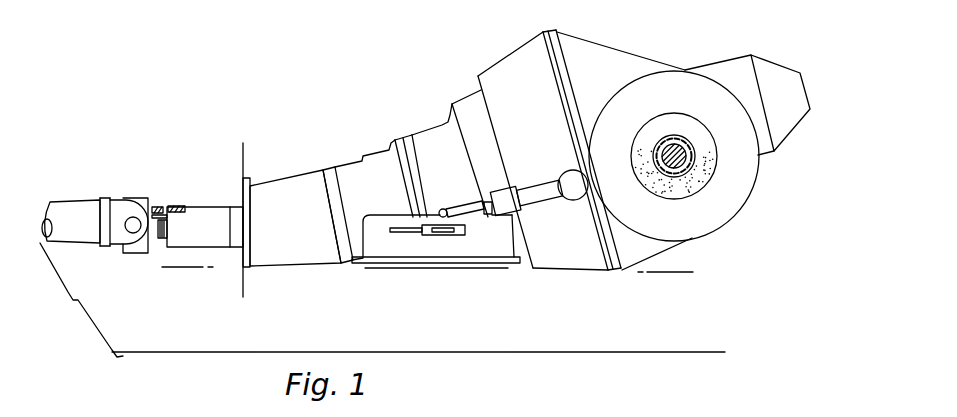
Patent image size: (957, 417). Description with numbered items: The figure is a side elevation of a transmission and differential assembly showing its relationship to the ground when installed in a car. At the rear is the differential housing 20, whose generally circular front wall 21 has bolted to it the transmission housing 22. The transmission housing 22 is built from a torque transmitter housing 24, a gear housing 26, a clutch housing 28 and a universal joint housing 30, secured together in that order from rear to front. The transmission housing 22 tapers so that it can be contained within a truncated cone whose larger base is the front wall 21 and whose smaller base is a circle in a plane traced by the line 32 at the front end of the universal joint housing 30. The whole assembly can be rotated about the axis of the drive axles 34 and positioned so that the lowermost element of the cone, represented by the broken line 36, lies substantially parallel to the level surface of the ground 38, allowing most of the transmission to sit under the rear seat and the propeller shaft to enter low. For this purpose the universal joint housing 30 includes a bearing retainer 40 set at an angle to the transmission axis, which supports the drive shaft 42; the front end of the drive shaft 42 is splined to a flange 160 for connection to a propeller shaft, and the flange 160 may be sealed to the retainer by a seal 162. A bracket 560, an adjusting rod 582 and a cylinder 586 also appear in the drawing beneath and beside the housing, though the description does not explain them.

The differential housing 20 is at (683, 82).
The front wall 21 is at (565, 56).
The transmission housing 22 is at (478, 74).
The torque transmitter housing 24 is at (518, 60).
The gear housing 26 is at (416, 143).
The clutch housing 28 is at (367, 197).
The universal joint housing 30 is at (268, 198).
The line 32 is at (243, 163).
The drive axles 34 is at (690, 153).
The broken line 36 is at (183, 272).
The ground 38 is at (432, 352).
The bearing retainer 40 is at (198, 220).
The drive shaft 42 is at (160, 238).
The flange 160 is at (127, 202).
The seal 162 is at (176, 207).
The bracket 560 is at (477, 245).
The adjusting rod 582 is at (417, 232).
The cylinder 586 is at (540, 190).